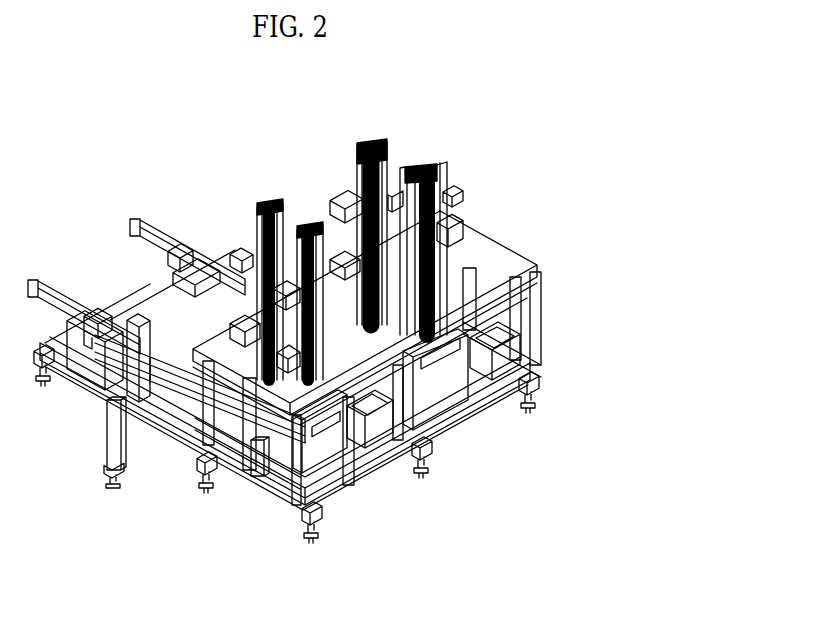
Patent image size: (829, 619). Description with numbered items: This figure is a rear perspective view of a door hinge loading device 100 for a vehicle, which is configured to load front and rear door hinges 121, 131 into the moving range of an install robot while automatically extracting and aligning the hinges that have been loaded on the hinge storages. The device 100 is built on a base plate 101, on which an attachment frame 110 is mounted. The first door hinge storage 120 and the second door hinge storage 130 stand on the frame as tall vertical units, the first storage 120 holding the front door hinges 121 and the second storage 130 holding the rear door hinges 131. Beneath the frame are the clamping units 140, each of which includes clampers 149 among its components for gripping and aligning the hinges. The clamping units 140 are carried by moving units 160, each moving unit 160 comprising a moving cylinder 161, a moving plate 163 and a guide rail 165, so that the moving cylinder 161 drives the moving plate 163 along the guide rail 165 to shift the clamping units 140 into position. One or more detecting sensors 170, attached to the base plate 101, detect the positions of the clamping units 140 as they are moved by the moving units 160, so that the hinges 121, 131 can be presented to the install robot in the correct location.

The door hinge loading device 100 is at (291, 74).
The base plate 101 is at (285, 492).
The attachment frame 110 is at (502, 253).
The first door hinge storage 120 is at (308, 198).
The front door hinge 121 is at (259, 206).
The second door hinge storage 130 is at (442, 165).
The rear door hinge 131 is at (419, 158).
The clamping unit 140 is at (425, 378).
The clamper 149 is at (332, 421).
The moving unit 160 is at (78, 300).
The moving cylinder 161 is at (61, 283).
The moving plate 163 is at (298, 486).
The guide rail 165 is at (198, 420).
The detecting sensor 170 is at (108, 413).